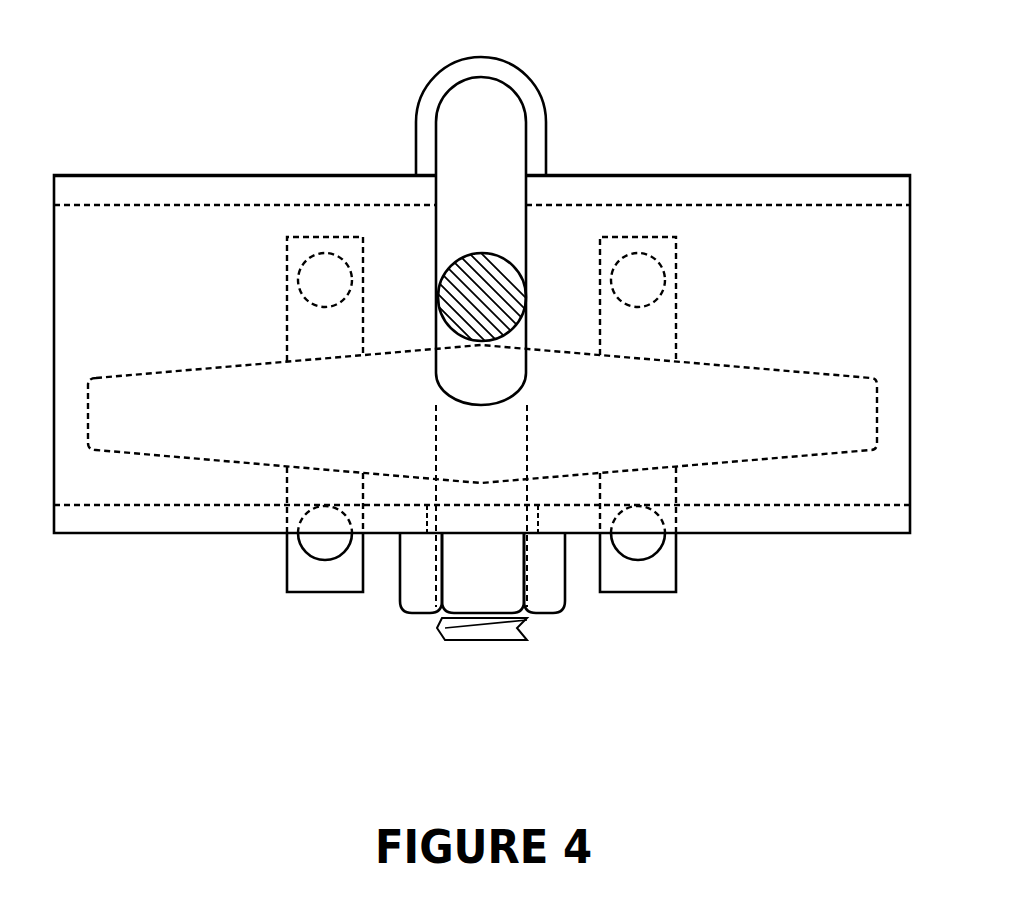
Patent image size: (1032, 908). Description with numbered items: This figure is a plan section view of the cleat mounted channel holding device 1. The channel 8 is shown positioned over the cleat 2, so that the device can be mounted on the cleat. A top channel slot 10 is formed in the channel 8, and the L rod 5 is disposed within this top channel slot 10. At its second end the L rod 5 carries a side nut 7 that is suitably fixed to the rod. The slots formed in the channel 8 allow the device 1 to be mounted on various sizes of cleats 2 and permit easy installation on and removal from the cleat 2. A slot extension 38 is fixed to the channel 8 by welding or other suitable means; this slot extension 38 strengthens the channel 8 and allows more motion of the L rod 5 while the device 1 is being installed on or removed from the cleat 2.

The cleat mounted channel holding device 1 is at (198, 175).
The channel 8 is at (327, 175).
The slot extension 38 is at (498, 60).
The top channel slot 10 is at (528, 228).
The cleat 2 is at (210, 463).
The side nut 7 is at (408, 613).
The L rod 5 is at (500, 640).